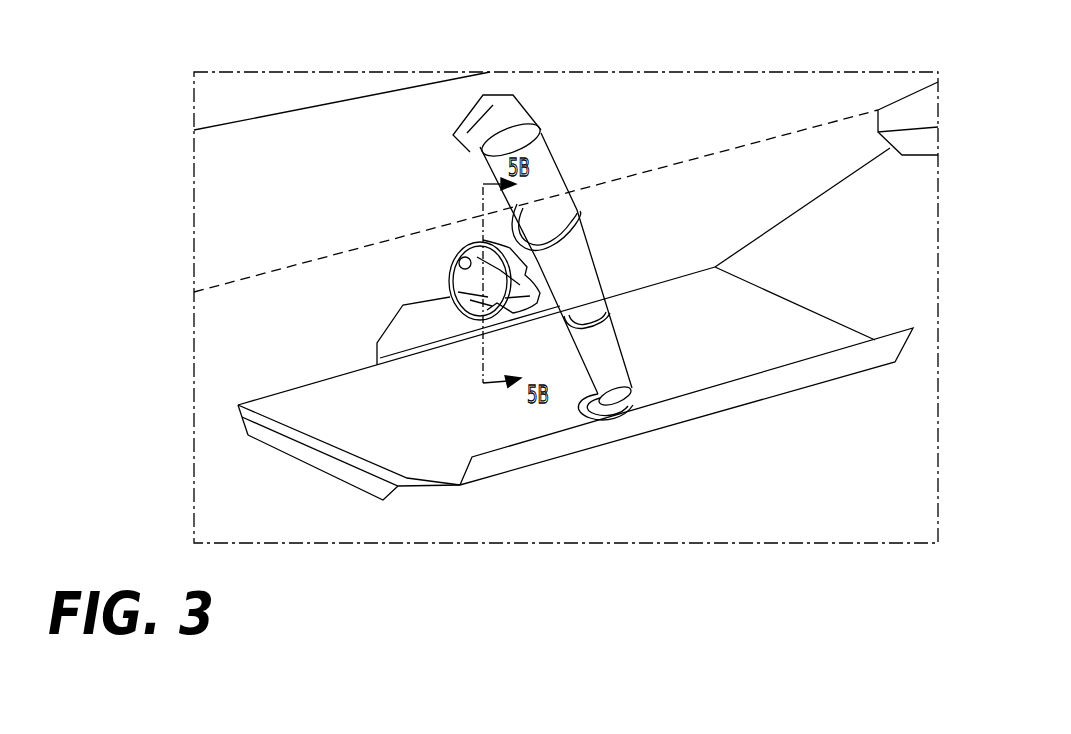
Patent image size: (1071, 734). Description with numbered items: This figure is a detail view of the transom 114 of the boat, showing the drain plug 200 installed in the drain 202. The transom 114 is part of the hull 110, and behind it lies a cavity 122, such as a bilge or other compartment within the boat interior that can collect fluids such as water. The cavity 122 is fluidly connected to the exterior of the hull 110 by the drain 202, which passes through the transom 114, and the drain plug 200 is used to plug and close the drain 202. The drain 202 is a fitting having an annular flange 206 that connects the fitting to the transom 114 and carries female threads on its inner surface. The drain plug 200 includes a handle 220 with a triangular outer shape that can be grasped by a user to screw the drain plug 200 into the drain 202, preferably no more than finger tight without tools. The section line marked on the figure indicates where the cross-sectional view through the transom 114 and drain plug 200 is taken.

The hull 110 is at (667, 100).
The transom 114 is at (215, 253).
The cavity 122 is at (735, 183).
The drain plug 200 is at (464, 357).
The drain 202 is at (415, 270).
The flange 206 is at (450, 272).
The handle 220 is at (523, 303).